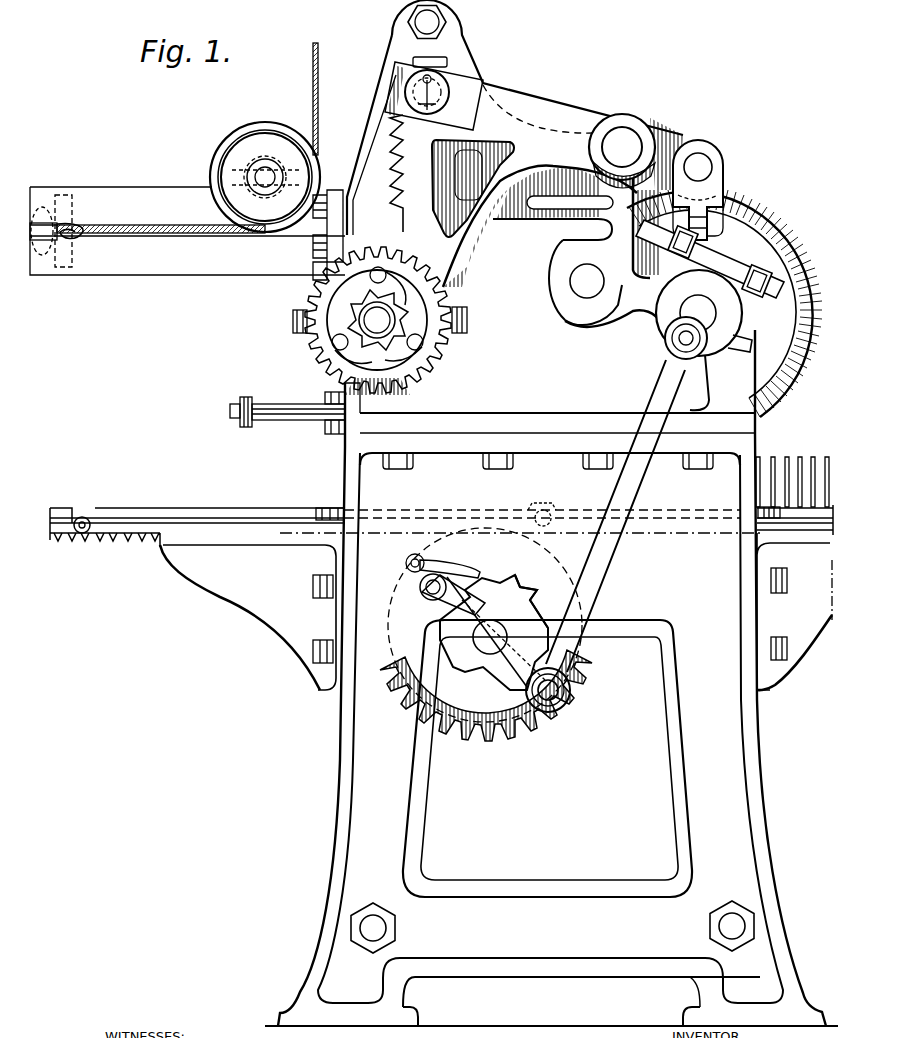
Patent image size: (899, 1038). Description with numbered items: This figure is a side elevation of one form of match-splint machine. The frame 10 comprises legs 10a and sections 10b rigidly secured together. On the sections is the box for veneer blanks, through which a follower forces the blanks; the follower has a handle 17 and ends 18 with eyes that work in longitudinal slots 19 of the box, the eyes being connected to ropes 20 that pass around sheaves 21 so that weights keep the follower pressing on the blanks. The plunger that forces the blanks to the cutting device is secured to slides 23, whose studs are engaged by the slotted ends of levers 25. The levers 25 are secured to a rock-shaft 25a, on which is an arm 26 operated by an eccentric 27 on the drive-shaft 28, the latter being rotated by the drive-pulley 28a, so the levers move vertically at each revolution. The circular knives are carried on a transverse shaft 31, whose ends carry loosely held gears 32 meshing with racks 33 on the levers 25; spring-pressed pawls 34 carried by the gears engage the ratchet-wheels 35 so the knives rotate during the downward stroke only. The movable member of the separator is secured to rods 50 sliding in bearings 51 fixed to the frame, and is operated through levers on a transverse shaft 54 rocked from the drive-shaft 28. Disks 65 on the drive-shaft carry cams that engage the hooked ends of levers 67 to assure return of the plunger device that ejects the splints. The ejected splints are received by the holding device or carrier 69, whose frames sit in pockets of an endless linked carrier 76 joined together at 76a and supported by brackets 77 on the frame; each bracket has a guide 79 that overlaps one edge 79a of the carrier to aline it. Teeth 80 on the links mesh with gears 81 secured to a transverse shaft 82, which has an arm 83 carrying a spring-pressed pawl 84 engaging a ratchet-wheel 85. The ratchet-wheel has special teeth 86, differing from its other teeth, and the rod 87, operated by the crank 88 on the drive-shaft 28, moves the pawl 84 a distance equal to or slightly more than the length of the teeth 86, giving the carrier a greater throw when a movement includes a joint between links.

The frame 10 is at (551, 533).
The legs 10a is at (342, 805).
The sections 10b is at (550, 222).
The handle 17 is at (28, 225).
The ends 18 is at (58, 240).
The longitudinal slots 19 is at (155, 226).
The ropes 20 is at (318, 108).
The sheaves 21 is at (228, 140).
The slides 23 is at (413, 62).
The levers 25 is at (535, 103).
The rock-shaft 25a is at (628, 137).
The arm 26 is at (690, 146).
The eccentric 27 is at (712, 205).
The drive-shaft 28 is at (688, 312).
The drive-pulley 28a is at (785, 232).
The shaft 31 is at (390, 320).
The gears 32 is at (433, 352).
The racks 33 is at (400, 202).
The ratchet 34 is at (392, 353).
The ratchet-wheels 35 is at (377, 315).
The rods 50 is at (278, 404).
The bearings 51 is at (338, 424).
The transverse shaft 54 is at (573, 280).
The disks 65 is at (742, 272).
The levers 67 is at (630, 238).
The holding device or carrier 69 is at (405, 506).
The endless linked carrier 76 is at (150, 519).
The joint 76a is at (88, 516).
The brackets 77 is at (250, 600).
The guide 79 is at (322, 506).
The edge 79a is at (102, 543).
The teeth 80 is at (140, 543).
The gears 81 is at (583, 676).
The transverse shaft 82 is at (498, 634).
The arm 83 is at (478, 612).
The spring-pressed pawl 84 is at (478, 570).
The ratchet-wheel 85 is at (520, 604).
The teeth 86 is at (515, 597).
The rod 87 is at (610, 556).
The crank 88 is at (716, 335).